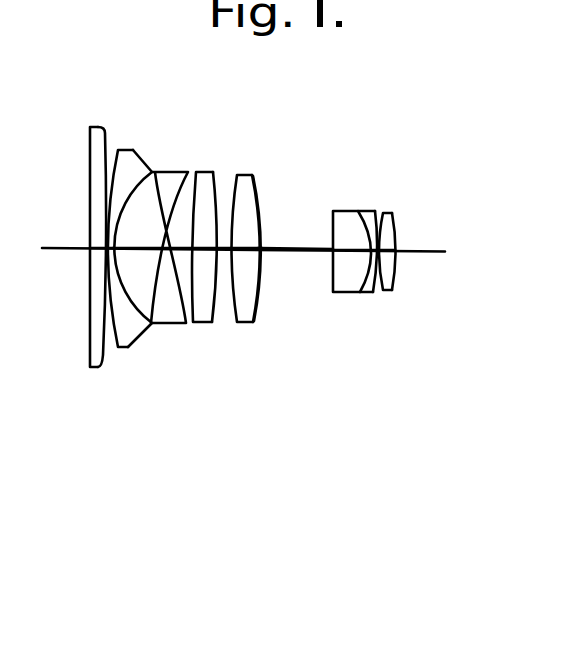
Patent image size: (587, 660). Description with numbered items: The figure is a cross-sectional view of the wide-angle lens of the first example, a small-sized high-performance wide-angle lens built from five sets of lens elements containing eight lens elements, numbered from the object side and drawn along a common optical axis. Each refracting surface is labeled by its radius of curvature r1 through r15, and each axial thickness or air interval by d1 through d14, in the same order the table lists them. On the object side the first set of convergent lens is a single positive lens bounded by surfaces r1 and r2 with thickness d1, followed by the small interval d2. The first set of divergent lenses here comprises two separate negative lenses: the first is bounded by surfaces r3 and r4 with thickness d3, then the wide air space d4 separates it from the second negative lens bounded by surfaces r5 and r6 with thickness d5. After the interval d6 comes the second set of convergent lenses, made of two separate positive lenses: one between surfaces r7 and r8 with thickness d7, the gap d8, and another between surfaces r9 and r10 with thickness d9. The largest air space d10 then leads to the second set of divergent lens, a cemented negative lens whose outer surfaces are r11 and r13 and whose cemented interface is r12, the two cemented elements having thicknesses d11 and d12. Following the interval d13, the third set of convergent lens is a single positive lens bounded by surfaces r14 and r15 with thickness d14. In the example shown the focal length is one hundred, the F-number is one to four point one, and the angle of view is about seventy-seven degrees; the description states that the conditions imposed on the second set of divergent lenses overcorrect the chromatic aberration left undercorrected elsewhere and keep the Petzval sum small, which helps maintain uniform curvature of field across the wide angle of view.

The radius of curvature of the first lens surface r1 is at (90, 126).
The radius of curvature of the second lens surface r2 is at (103, 127).
The radius of curvature of the third lens surface r3 is at (132, 149).
The radius of curvature of the fourth lens surface r4 is at (152, 171).
The radius of curvature of the fifth lens surface r5 is at (187, 171).
The radius of curvature of the sixth lens surface r6 is at (197, 171).
The radius of curvature of the seventh lens surface r7 is at (213, 171).
The radius of curvature of the eighth lens surface r8 is at (240, 174).
The radius of curvature of the ninth lens surface r9 is at (253, 174).
The radius of curvature of the tenth lens surface r10 is at (259, 178).
The radius of curvature of the eleventh lens surface r11 is at (337, 210).
The radius of curvature of the twelfth lens surface r12 is at (358, 210).
The radius of curvature of the thirteenth lens surface r13 is at (377, 210).
The radius of curvature of the fourteenth lens surface r14 is at (384, 212).
The radius of curvature of the fifteenth lens surface r15 is at (392, 212).
The thickness of the first lens d1 is at (100, 255).
The interval between the second and third lens surfaces d2 is at (110, 255).
The thickness of the first negative lens d3 is at (128, 255).
The interval between the fourth and fifth lens surfaces d4 is at (143, 255).
The thickness of the second negative lens d5 is at (172, 255).
The interval between the sixth and seventh lens surfaces d6 is at (205, 255).
The thickness of the first positive lens of the second convergent set d7 is at (227, 255).
The interval between the eighth and ninth lens surfaces d8 is at (239, 252).
The thickness of the second positive lens of the second convergent set d9 is at (259, 322).
The interval between the tenth and eleventh lens surfaces d10 is at (298, 251).
The thickness of the first element of the cemented negative lens d11 is at (346, 253).
The thickness of the second element of the cemented negative lens d12 is at (374, 253).
The interval between the thirteenth and fourteenth lens surfaces d13 is at (384, 291).
The thickness of the third convergent lens d14 is at (393, 291).